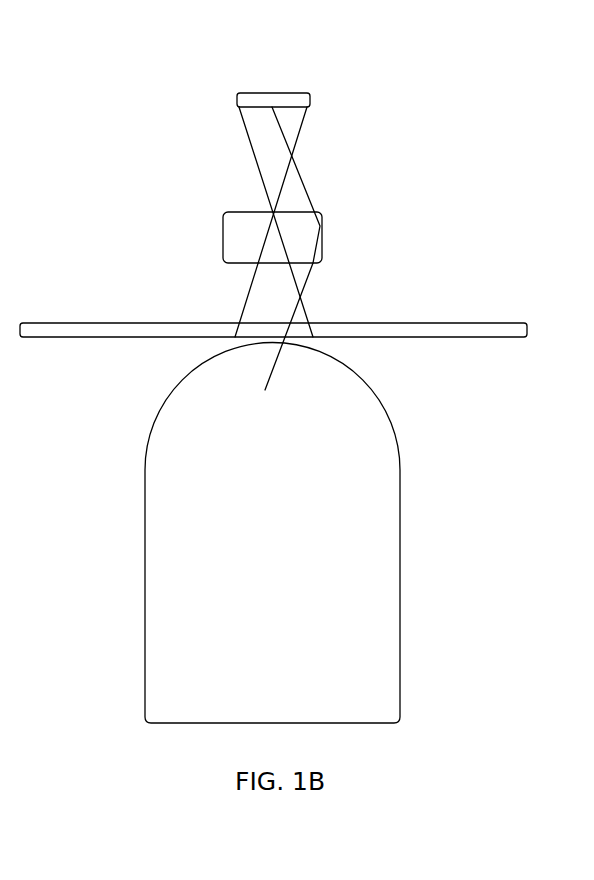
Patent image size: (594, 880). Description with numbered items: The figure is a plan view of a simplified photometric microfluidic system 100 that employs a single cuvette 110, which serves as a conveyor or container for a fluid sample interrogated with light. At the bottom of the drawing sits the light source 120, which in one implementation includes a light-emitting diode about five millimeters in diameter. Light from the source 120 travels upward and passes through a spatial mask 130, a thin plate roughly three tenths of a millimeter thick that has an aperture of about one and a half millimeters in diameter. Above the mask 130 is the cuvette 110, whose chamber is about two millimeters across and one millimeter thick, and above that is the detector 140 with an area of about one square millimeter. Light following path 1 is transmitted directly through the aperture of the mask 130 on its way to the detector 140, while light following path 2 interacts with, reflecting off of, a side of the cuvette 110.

The photometric microfluidic system 100 is at (131, 115).
The detector 140 is at (297, 93).
The cuvette 110 is at (238, 238).
The spatial mask 130 is at (273, 362).
The light source 120 is at (289, 636).
The path 1 is at (288, 176).
The path 2 is at (313, 272).